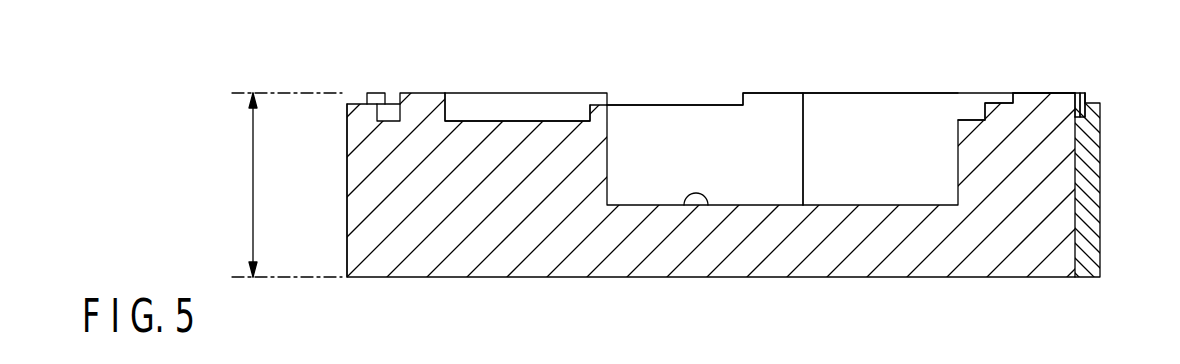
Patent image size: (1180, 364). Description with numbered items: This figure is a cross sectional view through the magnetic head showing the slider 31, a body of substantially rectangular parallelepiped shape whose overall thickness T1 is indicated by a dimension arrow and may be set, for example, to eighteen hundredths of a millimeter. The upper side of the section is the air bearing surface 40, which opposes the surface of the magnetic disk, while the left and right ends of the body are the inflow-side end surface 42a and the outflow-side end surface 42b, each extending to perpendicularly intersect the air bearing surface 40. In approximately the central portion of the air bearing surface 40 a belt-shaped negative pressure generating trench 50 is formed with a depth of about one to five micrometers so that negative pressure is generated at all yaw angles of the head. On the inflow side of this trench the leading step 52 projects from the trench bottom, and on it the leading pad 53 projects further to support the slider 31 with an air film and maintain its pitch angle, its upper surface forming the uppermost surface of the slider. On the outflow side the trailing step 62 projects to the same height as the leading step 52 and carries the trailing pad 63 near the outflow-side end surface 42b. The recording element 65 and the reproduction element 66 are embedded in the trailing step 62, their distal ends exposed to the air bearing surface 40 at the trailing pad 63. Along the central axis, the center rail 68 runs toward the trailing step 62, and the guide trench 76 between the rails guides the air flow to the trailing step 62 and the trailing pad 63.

The slider 31 is at (497, 257).
The air bearing surface 40 is at (957, 93).
The inflow-side end surface 42a is at (347, 207).
The outflow-side end surface 42b is at (1100, 195).
The negative pressure generating trench 50 is at (683, 207).
The leading step 52 is at (465, 138).
The leading pad 53 is at (535, 92).
The trailing step 62 is at (998, 120).
The trailing pad 63 is at (1038, 92).
The recording element 65 is at (1080, 92).
The reproduction element 66 is at (1082, 105).
The center rail 68 is at (833, 92).
The guide trench 76 is at (880, 117).
The thickness of the slider T1 is at (281, 185).